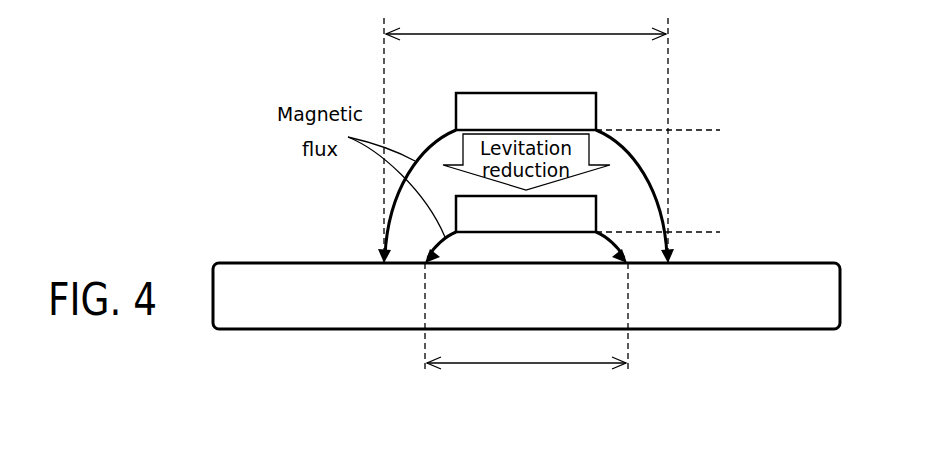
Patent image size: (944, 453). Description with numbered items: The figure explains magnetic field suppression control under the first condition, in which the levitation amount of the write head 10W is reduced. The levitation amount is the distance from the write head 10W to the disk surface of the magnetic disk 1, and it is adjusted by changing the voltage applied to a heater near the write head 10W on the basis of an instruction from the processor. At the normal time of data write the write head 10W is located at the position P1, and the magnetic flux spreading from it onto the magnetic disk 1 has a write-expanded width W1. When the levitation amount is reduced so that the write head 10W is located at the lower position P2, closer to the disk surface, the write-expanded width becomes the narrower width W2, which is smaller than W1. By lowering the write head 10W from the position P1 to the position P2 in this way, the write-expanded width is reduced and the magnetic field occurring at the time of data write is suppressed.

The magnetic disk 1 is at (800, 262).
The write head 10W is at (550, 93).
The position P1 is at (674, 130).
The position P2 is at (674, 235).
The write-expanded width W1 is at (526, 134).
The write-expanded width W2 is at (526, 334).